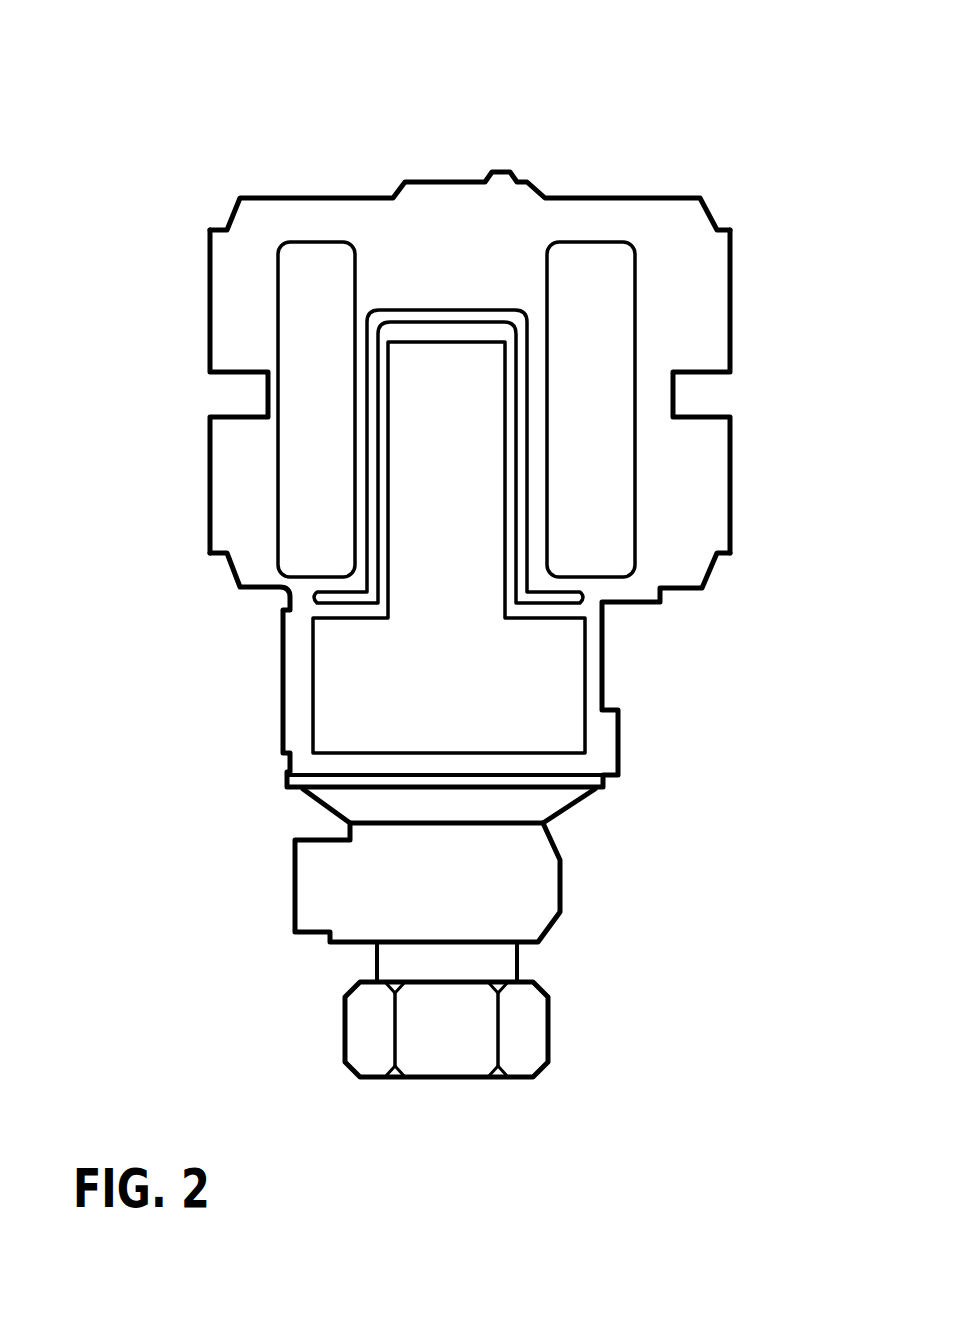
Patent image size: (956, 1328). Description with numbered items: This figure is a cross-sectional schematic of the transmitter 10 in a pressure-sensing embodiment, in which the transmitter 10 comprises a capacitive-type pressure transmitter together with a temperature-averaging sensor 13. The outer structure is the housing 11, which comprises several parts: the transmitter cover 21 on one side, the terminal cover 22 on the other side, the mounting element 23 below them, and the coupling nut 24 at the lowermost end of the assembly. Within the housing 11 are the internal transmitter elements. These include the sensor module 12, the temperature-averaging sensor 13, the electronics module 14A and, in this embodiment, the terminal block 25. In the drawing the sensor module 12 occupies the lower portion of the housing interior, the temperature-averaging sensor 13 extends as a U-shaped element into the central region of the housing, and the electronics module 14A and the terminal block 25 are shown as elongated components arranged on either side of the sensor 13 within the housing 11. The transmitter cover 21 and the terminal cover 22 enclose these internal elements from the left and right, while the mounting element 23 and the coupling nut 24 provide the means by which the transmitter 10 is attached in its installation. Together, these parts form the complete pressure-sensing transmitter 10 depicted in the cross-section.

The transmitter 10 is at (143, 126).
The housing 11 is at (340, 197).
The sensor module 12 is at (315, 688).
The temperature-averaging sensor 13 is at (456, 310).
The electronics module 14A is at (277, 340).
The transmitter cover 21 is at (180, 499).
The terminal cover 22 is at (758, 500).
The mounting element 23 is at (295, 892).
The coupling nut 24 is at (367, 1037).
The terminal block 25 is at (635, 330).